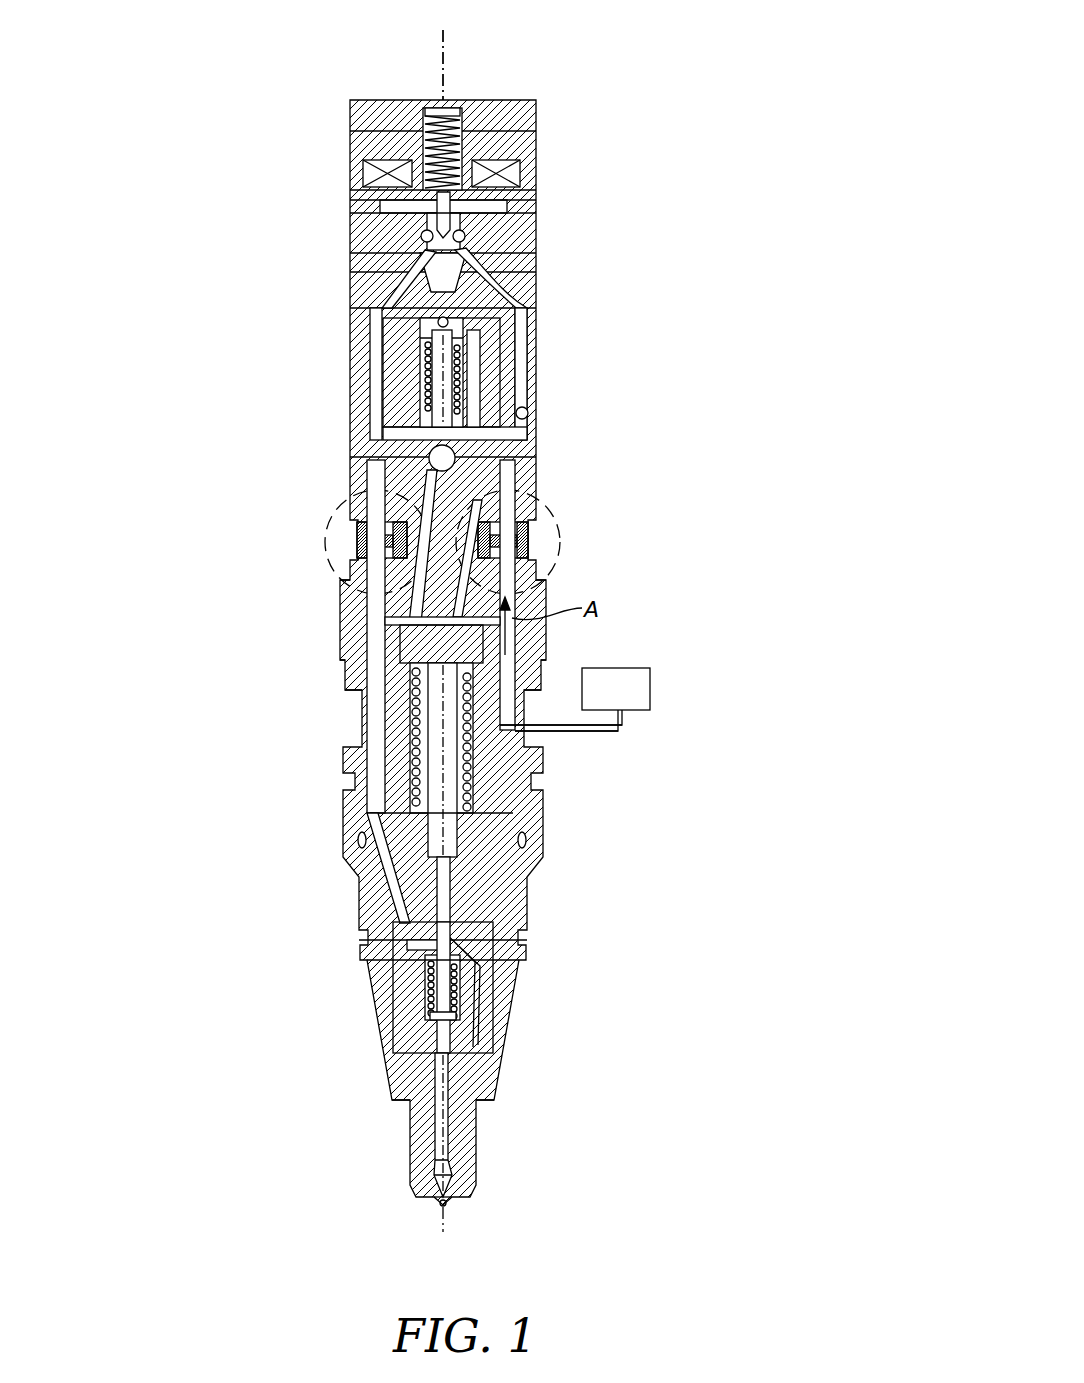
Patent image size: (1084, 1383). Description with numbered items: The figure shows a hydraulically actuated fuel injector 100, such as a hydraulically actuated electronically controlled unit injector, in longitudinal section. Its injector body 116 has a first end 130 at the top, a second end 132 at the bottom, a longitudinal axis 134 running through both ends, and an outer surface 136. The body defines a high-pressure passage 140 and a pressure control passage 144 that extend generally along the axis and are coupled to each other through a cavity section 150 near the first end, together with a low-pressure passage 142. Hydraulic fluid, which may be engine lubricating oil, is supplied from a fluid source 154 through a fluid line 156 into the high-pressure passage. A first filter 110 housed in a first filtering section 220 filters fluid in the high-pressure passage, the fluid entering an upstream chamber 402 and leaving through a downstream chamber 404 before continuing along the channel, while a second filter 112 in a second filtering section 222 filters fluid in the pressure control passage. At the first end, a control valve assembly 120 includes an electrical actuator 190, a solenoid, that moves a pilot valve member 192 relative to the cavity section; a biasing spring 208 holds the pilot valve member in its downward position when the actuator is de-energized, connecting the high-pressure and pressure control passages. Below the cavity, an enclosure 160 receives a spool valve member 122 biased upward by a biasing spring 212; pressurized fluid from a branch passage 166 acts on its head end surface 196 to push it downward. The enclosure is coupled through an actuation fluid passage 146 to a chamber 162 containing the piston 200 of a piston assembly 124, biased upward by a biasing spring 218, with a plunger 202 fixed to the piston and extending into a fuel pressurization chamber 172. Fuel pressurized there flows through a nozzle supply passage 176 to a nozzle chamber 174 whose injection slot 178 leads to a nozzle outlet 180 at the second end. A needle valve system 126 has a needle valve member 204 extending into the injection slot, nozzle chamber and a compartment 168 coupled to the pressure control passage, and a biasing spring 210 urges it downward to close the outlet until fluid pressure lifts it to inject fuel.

The hydraulically actuated fuel injector 100 is at (720, 133).
The first filter 110 is at (505, 550).
The second filter 112 is at (378, 550).
The injector body 116 is at (508, 550).
The control valve assembly 120 is at (536, 150).
The spool valve member 122 is at (470, 402).
The piston assembly 124 is at (407, 712).
The needle valve system 126 is at (450, 1118).
The first end 130 is at (536, 118).
The second end 132 is at (470, 1197).
The longitudinal axis 134 is at (443, 70).
The outer surface 136 is at (537, 465).
The high-pressure passage 140 is at (495, 656).
The low-pressure passage 142 is at (352, 296).
The pressure control passage 144 is at (345, 612).
The actuation fluid passage 146 is at (480, 356).
The cavity section 150 is at (352, 242).
The fluid source 154 is at (650, 672).
The fluid line 156 is at (575, 733).
The enclosure 160 is at (395, 332).
The chamber 162 is at (400, 663).
The branch passage 166 is at (525, 300).
The compartment 168 is at (430, 996).
The fuel pressurization chamber 172 is at (445, 870).
The nozzle chamber 174 is at (430, 1076).
The nozzle supply passage 176 is at (470, 1000).
The injection slot 178 is at (437, 1130).
The nozzle outlet 180 is at (447, 1200).
The electrical actuator 190 is at (363, 172).
The pilot valve member 192 is at (455, 222).
The head end surface 196 is at (465, 326).
The piston 200 is at (367, 650).
The plunger 202 is at (420, 830).
The needle valve member 204 is at (450, 1140).
The biasing spring 208 is at (465, 122).
The biasing spring 210 is at (455, 985).
The biasing spring 212 is at (425, 382).
The biasing spring 218 is at (470, 776).
The first filtering section 220 is at (556, 514).
The second filtering section 222 is at (332, 518).
The chamber 402 is at (490, 540).
The chamber 404 is at (500, 526).